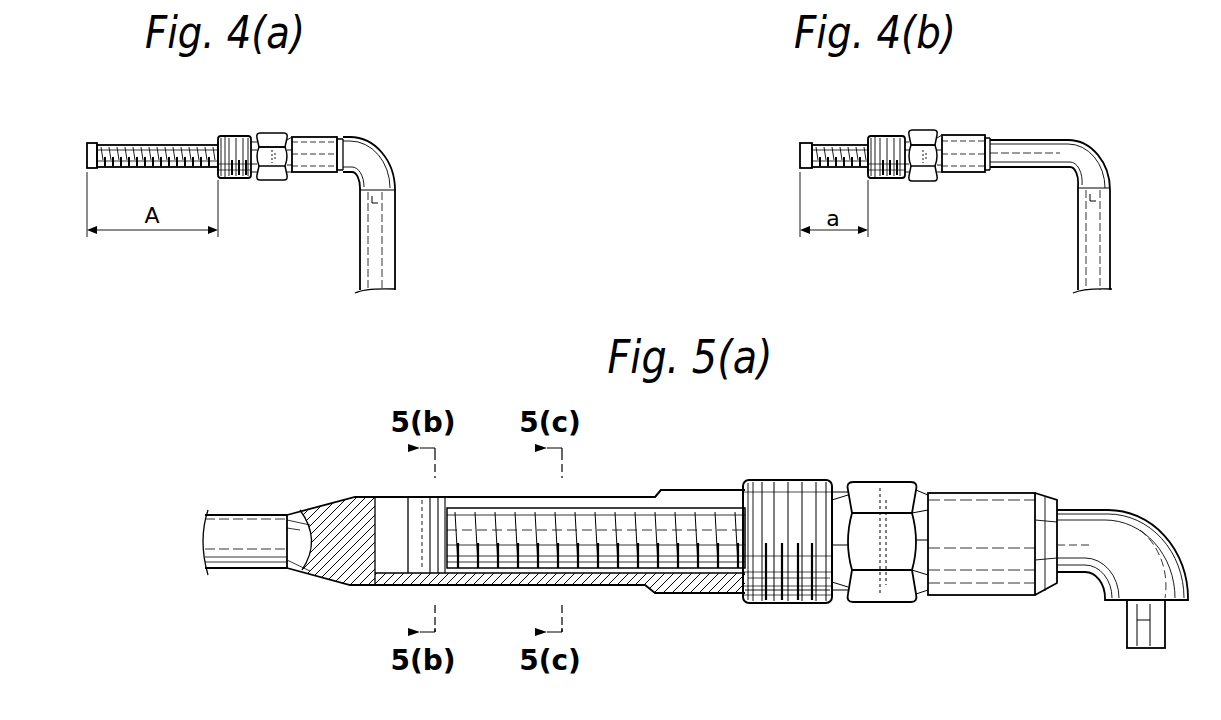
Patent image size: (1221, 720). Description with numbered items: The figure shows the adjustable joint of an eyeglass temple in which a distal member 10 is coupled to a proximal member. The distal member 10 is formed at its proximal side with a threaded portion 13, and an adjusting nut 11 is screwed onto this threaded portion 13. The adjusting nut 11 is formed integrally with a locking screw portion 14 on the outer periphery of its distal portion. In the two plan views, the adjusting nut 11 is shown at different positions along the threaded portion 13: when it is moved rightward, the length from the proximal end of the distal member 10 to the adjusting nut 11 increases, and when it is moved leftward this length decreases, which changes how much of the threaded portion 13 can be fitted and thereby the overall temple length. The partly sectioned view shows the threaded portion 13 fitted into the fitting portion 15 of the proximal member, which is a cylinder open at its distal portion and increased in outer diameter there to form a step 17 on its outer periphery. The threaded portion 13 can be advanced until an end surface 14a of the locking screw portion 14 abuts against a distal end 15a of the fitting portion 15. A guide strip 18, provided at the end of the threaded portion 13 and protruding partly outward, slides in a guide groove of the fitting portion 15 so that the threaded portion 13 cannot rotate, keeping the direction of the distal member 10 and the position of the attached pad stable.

In FIG. 4A, the distal member 10 is at (382, 162).
In FIG. 4B, the distal member 10 is at (1095, 163).
In FIG. 5A, the distal member 10 is at (1122, 579).
In FIG. 4A, the adjusting nut 11 is at (312, 140).
In FIG. 4B, the adjusting nut 11 is at (962, 138).
In FIG. 5A, the adjusting nut 11 is at (870, 490).
In FIG. 4A, the threaded portion 13 is at (145, 143).
In FIG. 4B, the threaded portion 13 is at (825, 142).
In FIG. 5A, the threaded portion 13 is at (642, 587).
In FIG. 4A, the locking screw portion 14 is at (240, 140).
In FIG. 4B, the locking screw portion 14 is at (890, 140).
In FIG. 5A, the locking screw portion 14 is at (810, 592).
In FIG. 4A, the end surface 14a is at (219, 137).
In FIG. 4B, the end surface 14a is at (868, 137).
In FIG. 5A, the end surface 14a is at (741, 500).
In FIG. 5A, the fitting portion 15 is at (477, 587).
In FIG. 5A, the distal end 15a is at (762, 590).
In FIG. 5A, the step 17 is at (652, 495).
In FIG. 4A, the guide strip 18 is at (86, 147).
In FIG. 4B, the guide strip 18 is at (799, 152).
In FIG. 5A, the guide strip 18 is at (415, 533).